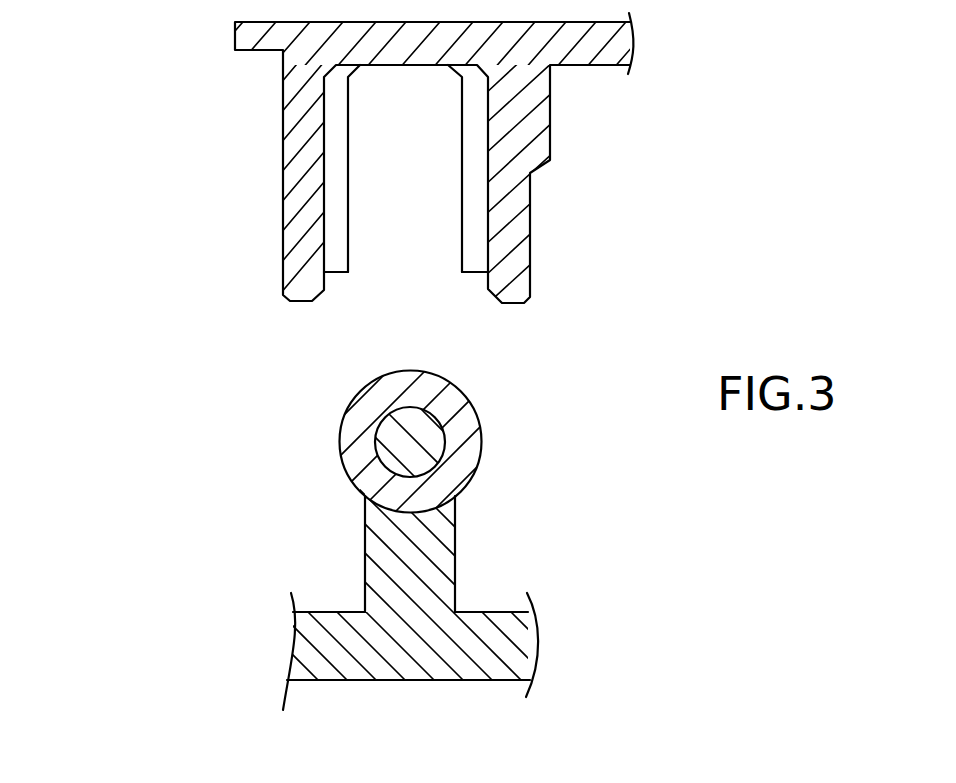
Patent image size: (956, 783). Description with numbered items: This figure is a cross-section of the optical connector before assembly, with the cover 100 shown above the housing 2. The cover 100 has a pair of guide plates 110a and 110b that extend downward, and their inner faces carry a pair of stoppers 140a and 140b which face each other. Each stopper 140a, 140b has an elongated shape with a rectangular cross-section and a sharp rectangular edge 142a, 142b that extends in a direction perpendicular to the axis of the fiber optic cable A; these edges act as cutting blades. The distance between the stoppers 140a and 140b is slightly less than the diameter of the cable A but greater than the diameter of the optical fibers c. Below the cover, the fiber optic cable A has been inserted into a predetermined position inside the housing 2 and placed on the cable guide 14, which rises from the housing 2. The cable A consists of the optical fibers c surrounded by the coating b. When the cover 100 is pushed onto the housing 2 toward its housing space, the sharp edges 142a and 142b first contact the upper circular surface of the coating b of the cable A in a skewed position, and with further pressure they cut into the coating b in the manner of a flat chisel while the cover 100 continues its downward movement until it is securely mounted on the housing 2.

The cover 100 is at (226, 33).
The guide plate 110a is at (282, 148).
The guide plate 110b is at (531, 212).
The stopper 140a is at (349, 129).
The stopper 140b is at (462, 147).
The sharp rectangular edge 142a is at (350, 274).
The sharp rectangular edge 142b is at (461, 275).
The fiber optic cable A is at (480, 430).
The coating b is at (360, 406).
The optical fibers c is at (377, 447).
The cable guide 14 is at (456, 527).
The housing 2 is at (413, 688).